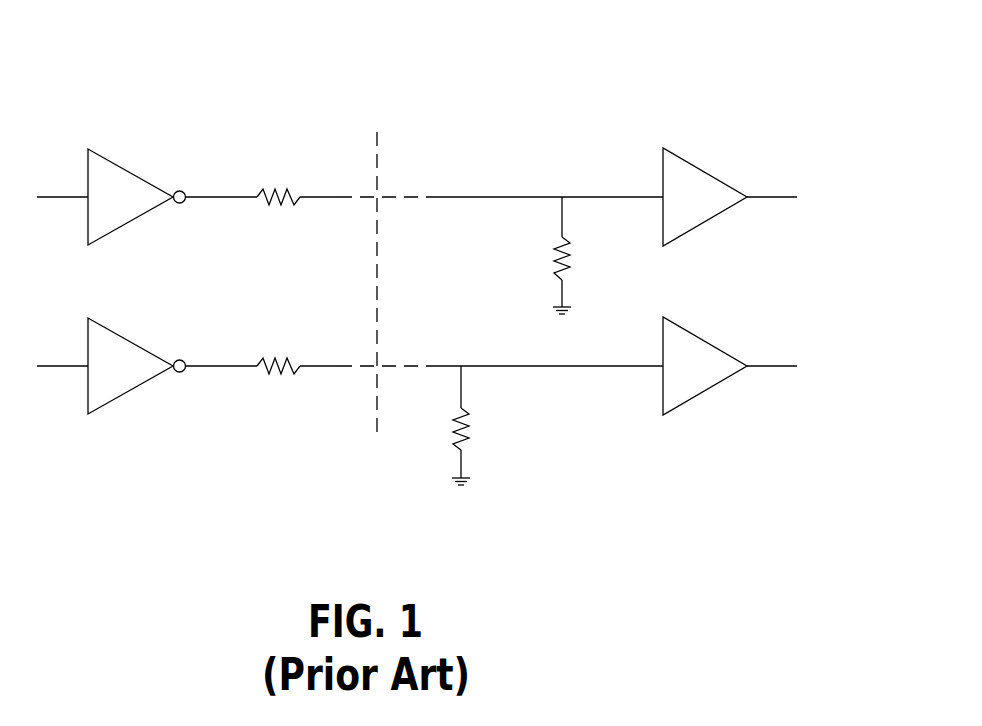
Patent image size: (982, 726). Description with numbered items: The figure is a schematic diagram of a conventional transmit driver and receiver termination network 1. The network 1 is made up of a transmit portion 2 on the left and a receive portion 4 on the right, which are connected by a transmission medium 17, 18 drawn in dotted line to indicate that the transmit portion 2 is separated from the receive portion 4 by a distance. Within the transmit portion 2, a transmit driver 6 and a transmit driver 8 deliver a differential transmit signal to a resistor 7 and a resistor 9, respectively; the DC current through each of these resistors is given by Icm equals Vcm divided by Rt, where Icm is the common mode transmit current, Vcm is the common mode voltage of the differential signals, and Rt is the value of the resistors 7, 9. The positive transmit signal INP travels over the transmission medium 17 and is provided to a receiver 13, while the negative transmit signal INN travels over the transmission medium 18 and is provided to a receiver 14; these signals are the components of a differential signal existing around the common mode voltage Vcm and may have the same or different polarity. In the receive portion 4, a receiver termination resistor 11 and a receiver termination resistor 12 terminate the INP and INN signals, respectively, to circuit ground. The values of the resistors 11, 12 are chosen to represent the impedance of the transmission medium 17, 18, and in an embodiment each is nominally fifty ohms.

The network 1 is at (90, 38).
The transmit portion 2 is at (242, 76).
The receive portion 4 is at (465, 78).
The transmit driver 6 is at (115, 163).
The resistor 7 is at (265, 187).
The transmit driver 8 is at (115, 330).
The resistor 9 is at (263, 372).
The receiver termination resistor 11 is at (570, 257).
The receiver termination resistor 12 is at (467, 425).
The receiver 13 is at (690, 163).
The receiver 14 is at (692, 335).
The transmission medium 17 is at (383, 198).
The transmission medium 18 is at (372, 360).